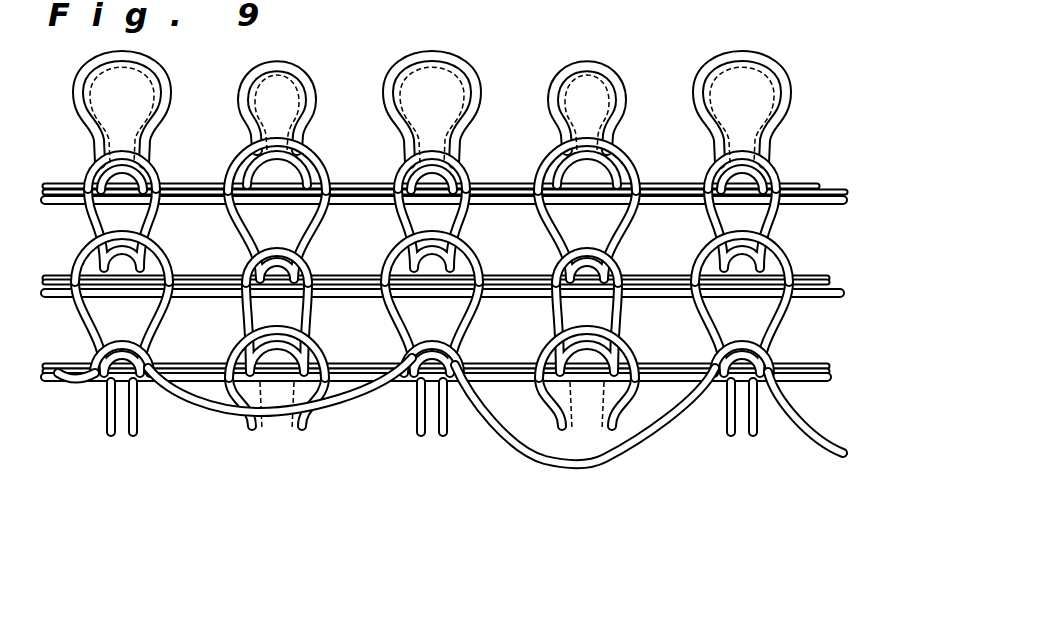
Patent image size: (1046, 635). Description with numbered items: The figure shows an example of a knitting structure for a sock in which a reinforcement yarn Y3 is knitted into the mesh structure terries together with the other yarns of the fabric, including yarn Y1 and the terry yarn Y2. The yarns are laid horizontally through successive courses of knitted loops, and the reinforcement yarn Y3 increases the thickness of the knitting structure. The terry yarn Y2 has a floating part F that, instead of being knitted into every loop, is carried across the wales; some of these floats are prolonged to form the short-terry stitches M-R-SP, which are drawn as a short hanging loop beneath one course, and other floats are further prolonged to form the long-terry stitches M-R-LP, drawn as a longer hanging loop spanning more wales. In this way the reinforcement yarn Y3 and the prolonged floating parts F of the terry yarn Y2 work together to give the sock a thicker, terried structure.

The first yarn Y1 is at (813, 185).
The reinforcement yarn Y3 is at (845, 189).
The terry yarn Y2 is at (843, 200).
The floating part F is at (120, 303).
The short-terry stitches M-R-SP is at (323, 415).
The long-terry stitches M-R-LP is at (603, 462).